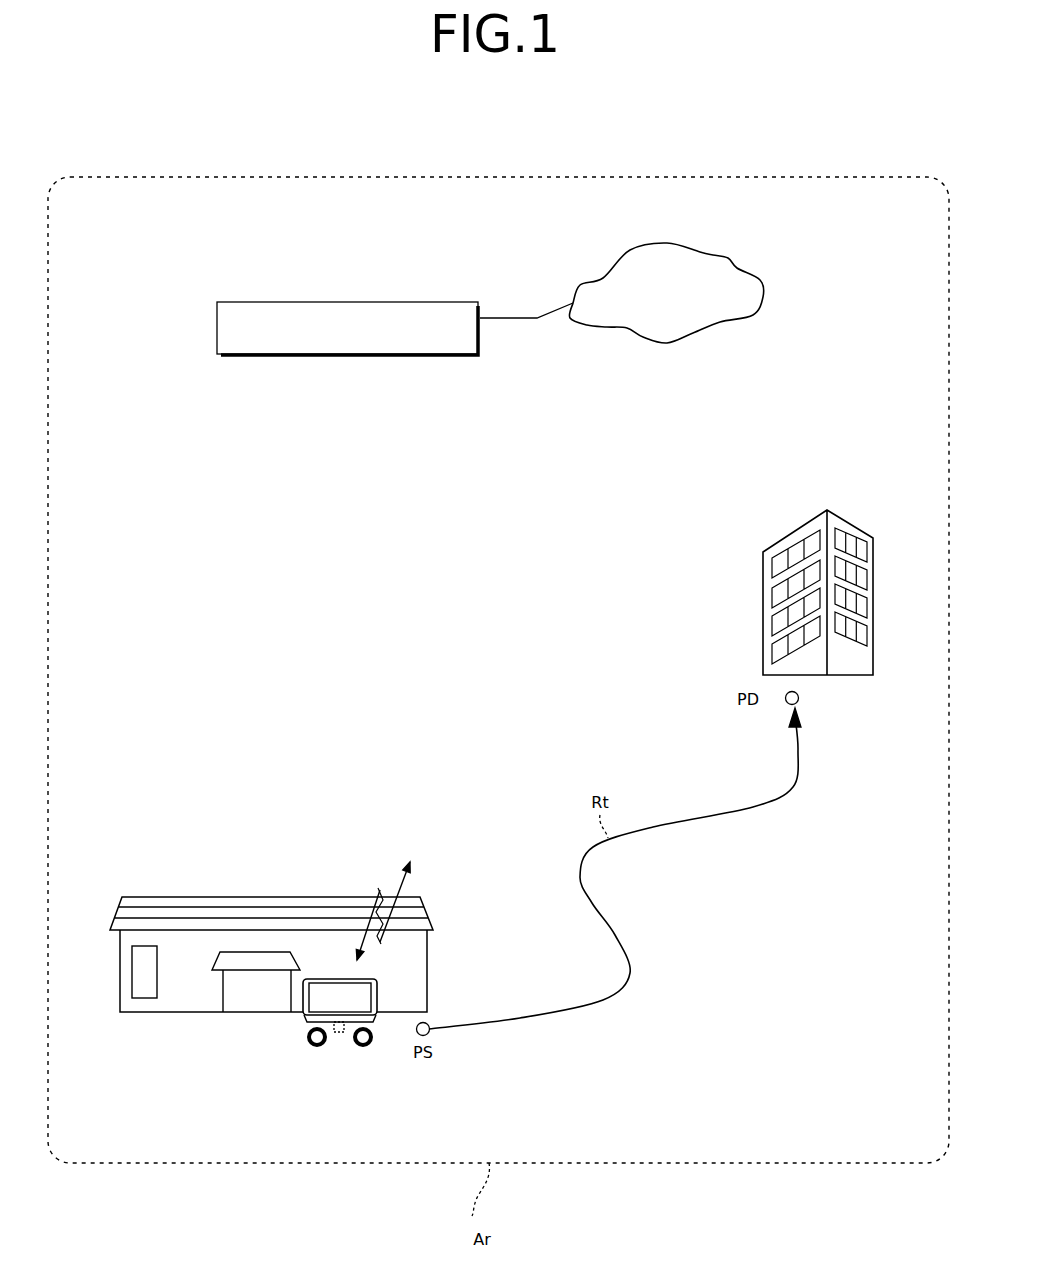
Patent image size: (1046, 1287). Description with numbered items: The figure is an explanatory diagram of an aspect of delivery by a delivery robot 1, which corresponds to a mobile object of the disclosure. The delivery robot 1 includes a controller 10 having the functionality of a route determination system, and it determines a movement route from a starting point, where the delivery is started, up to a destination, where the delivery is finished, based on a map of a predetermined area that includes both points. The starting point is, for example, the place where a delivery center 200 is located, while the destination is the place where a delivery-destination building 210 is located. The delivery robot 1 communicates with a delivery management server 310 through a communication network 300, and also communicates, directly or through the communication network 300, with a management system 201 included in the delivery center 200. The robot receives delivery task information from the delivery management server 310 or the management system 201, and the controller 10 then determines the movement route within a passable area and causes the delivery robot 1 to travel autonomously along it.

The delivery robot 1 is at (376, 995).
The controller 10 is at (388, 1032).
The delivery center 200 is at (254, 930).
The management system 201 is at (132, 972).
The delivery-destination building 210 is at (787, 540).
The communication network 300 is at (746, 258).
The delivery management server 310 is at (357, 302).